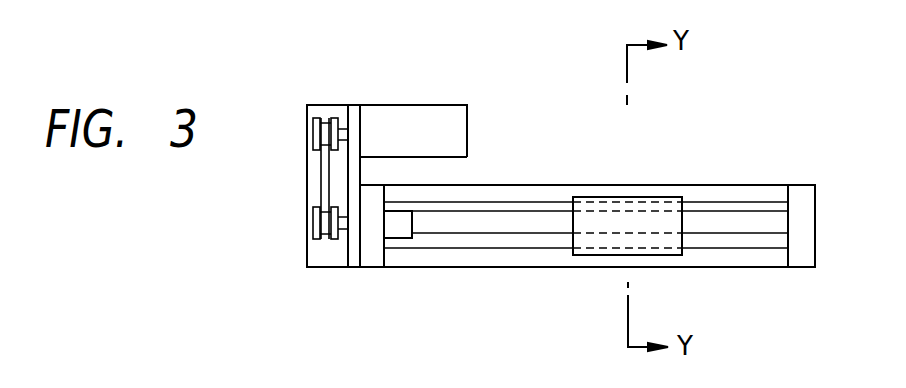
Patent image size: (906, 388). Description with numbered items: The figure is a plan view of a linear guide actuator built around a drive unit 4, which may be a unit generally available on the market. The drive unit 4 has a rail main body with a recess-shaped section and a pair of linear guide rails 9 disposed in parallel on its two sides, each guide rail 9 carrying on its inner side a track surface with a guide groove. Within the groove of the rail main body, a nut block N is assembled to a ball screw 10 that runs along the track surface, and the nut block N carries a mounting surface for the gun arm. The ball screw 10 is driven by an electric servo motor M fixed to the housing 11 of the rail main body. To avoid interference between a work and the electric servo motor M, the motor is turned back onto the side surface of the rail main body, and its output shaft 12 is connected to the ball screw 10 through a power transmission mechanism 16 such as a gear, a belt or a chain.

The drive unit 4 is at (516, 98).
The linear guide rails 9 is at (723, 193).
The ball screw 10 is at (531, 200).
The housing 11 is at (375, 258).
The output shaft 12 is at (344, 130).
The power transmission mechanism 16 is at (323, 173).
The electric servo motor M is at (410, 110).
The nut block N is at (633, 205).